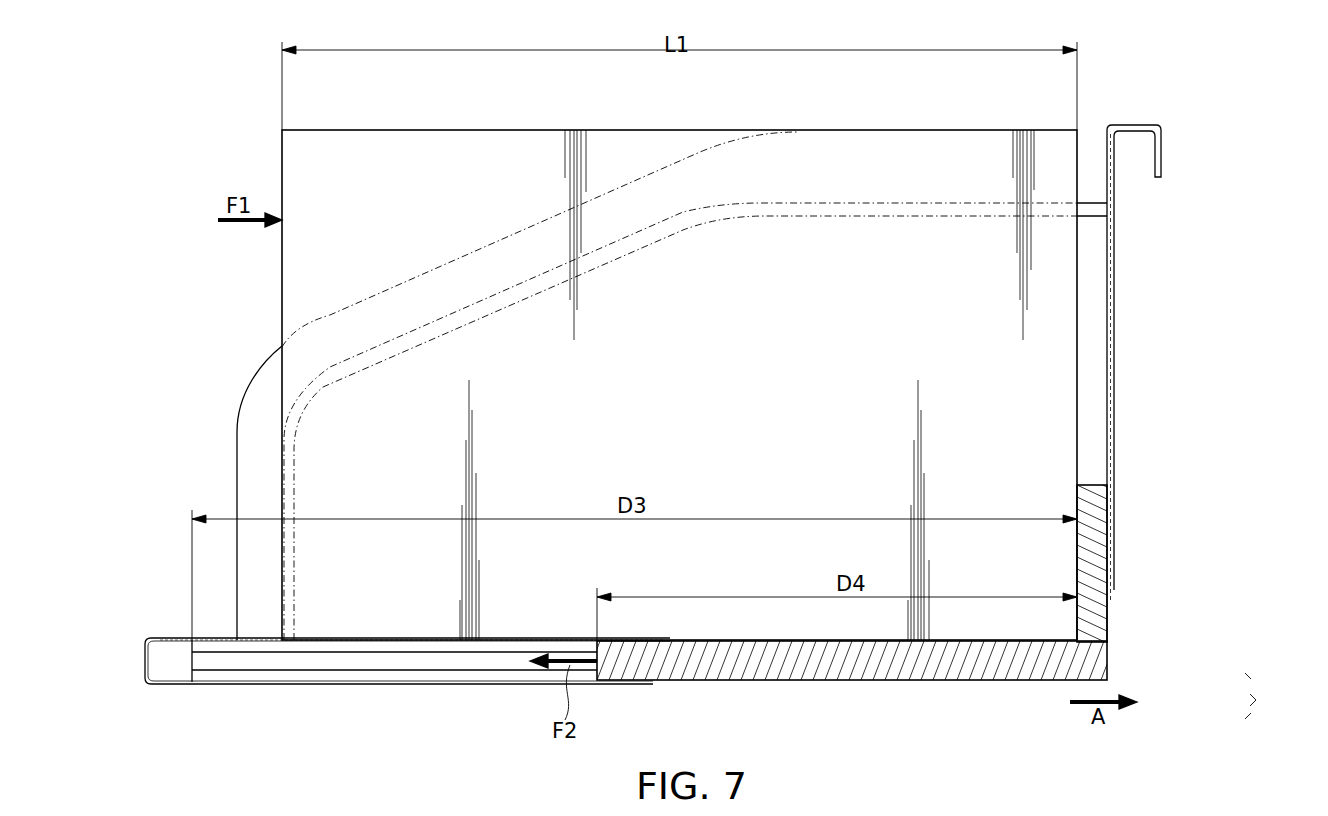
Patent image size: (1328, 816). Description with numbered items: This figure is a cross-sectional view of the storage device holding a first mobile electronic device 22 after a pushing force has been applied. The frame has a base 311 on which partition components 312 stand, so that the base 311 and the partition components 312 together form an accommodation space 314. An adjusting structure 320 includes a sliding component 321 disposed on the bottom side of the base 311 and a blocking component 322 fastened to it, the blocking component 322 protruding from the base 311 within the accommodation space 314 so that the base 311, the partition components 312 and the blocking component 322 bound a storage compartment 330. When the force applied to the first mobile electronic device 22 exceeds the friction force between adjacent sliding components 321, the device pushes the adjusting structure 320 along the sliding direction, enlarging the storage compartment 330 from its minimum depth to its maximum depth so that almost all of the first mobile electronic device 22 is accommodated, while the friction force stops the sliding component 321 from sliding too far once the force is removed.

The first mobile electronic device 22 is at (417, 148).
The base 311 is at (163, 639).
The partition component 312 is at (843, 207).
The accommodation space 314 is at (1088, 450).
The adjusting structure 320 is at (1272, 696).
The sliding component 321 is at (1087, 665).
The blocking component 322 is at (1093, 555).
The storage compartment 330 is at (1035, 497).